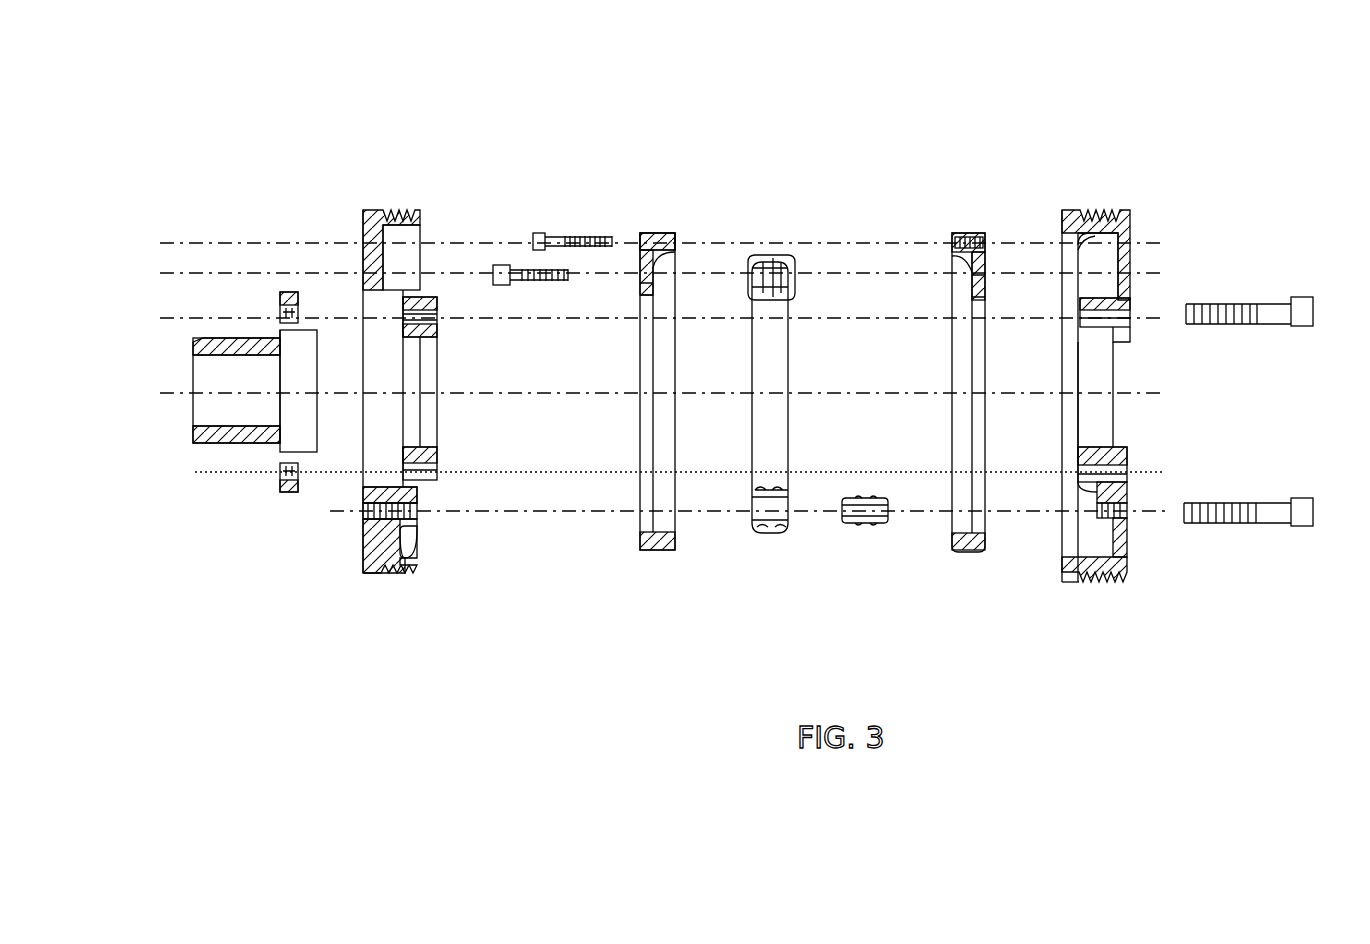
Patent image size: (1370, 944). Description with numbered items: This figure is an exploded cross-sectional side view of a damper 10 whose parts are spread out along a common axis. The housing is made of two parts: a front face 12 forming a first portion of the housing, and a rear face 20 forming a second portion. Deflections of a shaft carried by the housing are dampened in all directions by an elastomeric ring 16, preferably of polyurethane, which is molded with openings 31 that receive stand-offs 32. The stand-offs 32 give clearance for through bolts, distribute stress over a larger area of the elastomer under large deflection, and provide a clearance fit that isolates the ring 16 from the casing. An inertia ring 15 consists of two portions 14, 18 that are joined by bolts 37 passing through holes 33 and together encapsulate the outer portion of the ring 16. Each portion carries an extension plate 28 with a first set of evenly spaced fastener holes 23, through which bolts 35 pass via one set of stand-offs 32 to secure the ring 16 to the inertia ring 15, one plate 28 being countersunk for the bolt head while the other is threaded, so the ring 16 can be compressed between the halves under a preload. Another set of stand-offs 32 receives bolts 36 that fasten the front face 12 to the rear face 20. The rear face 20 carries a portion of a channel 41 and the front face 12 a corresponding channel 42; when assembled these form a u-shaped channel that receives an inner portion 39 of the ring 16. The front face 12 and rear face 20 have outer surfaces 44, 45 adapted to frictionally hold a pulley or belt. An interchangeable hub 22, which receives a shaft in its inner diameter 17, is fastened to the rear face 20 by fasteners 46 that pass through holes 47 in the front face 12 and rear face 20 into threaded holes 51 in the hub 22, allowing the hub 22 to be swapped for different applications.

The damper 10 is at (783, 41).
The front face 12 is at (1105, 190).
The portion of inertia ring 14 is at (973, 207).
The inertia ring 15 is at (812, 334).
The elastomeric ring 16 is at (757, 548).
The inner diameter 17 is at (193, 368).
The portion of inertia ring 18 is at (667, 207).
The rear face 20 is at (377, 188).
The interchangeable hub 22 is at (240, 278).
The fastener holes 23 is at (642, 283).
The extension plate 28 is at (642, 295).
The openings 31 is at (790, 518).
The stand-offs 32 is at (795, 257).
The holes 33 is at (642, 236).
The bolts 35 is at (505, 250).
The bolts 36 is at (1283, 553).
The bolts 37 is at (563, 217).
The inner portion 39 is at (778, 483).
The channel 41 is at (428, 300).
The channel 42 is at (1087, 303).
The outer surface 44 is at (1100, 583).
The outer surface 45 is at (398, 575).
The fasteners 46 is at (1265, 280).
The holes 47 is at (440, 322).
The threaded holes 51 is at (285, 306).